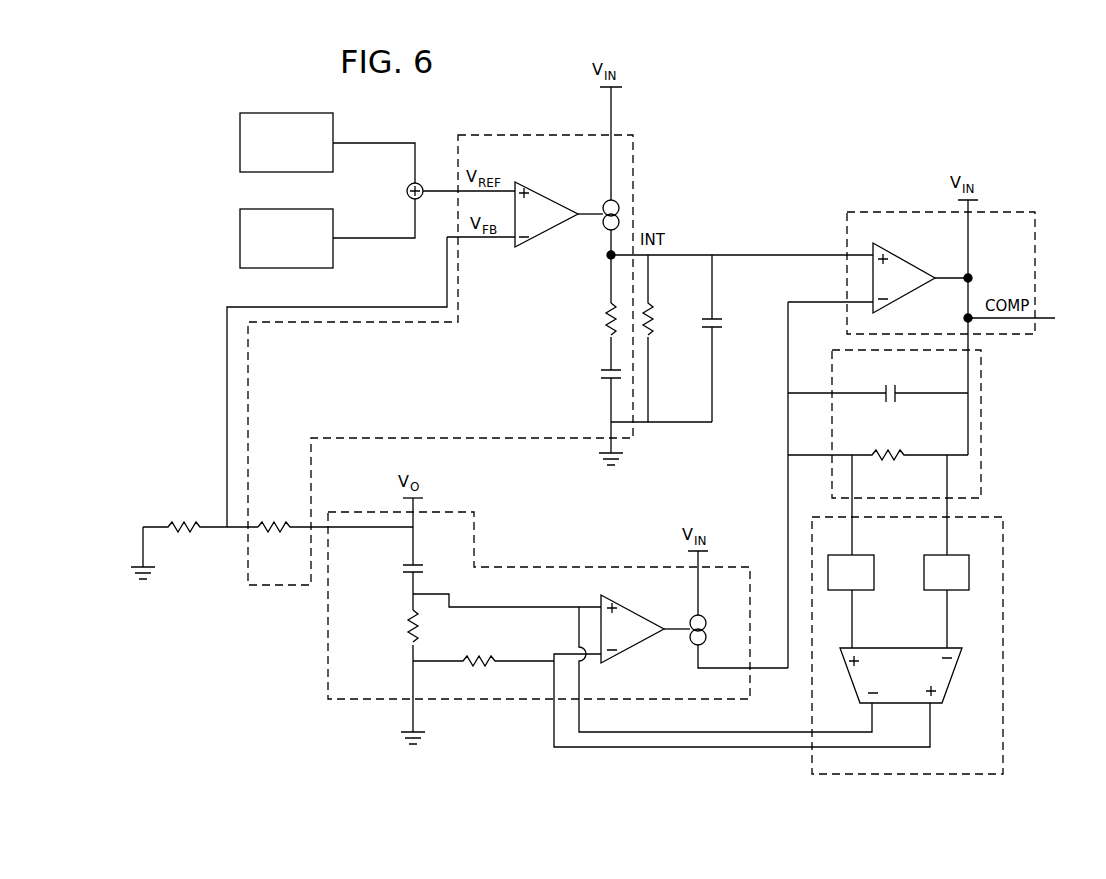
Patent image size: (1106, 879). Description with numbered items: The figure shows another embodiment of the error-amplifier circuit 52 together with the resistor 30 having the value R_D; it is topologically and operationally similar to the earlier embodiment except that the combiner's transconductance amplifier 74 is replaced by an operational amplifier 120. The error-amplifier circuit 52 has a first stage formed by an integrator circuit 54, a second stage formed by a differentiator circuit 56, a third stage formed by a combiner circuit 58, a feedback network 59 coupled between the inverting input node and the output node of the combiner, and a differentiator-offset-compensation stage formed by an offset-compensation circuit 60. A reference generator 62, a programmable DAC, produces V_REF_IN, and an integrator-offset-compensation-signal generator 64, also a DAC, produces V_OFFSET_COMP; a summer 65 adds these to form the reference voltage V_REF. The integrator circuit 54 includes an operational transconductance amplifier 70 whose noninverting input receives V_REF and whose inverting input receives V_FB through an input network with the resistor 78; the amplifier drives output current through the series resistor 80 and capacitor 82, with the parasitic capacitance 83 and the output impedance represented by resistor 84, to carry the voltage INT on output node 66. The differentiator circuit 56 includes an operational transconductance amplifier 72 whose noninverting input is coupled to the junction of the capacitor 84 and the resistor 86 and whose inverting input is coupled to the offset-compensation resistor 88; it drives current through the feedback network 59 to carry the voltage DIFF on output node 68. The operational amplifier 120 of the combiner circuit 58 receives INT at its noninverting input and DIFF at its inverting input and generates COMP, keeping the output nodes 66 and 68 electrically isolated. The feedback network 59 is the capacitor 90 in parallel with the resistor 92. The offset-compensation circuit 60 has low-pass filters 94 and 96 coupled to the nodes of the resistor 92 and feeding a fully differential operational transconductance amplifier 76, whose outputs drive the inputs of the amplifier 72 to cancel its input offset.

The reference generator 62 is at (286, 112).
The integrator-offset-compensation-signal generator 64 is at (286, 208).
The summer 65 is at (407, 191).
The operational transconductance amplifier 70 is at (546, 197).
The integrator circuit 54 is at (632, 133).
The output node 66 is at (606, 257).
The resistor 80 is at (607, 308).
The capacitor 82 is at (606, 370).
The resistor / capacitor 84 is at (653, 318).
The parasitic capacitance 83 is at (717, 316).
The operational amplifier 120 is at (904, 257).
The operational transconductance amplifier 74 is at (904, 297).
The combiner circuit 58 is at (1007, 211).
The feedback network 59 is at (983, 426).
The capacitor 90 is at (898, 397).
The resistor 92 is at (897, 461).
The offset-compensation circuit 60 is at (1004, 650).
The low-pass filter 94 is at (858, 556).
The low-pass filter 96 is at (952, 556).
The fully differential operational transconductance amplifier 76 is at (883, 648).
The operational transconductance amplifier 72 is at (635, 604).
The output node 68 is at (773, 669).
The differentiator circuit 56 is at (328, 672).
The resistor 86 is at (408, 617).
The offset-compensation resistor 88 is at (488, 659).
The resistor 30 is at (182, 540).
The resistor 78 is at (275, 540).
The error-amplifier circuit 52 is at (324, 756).